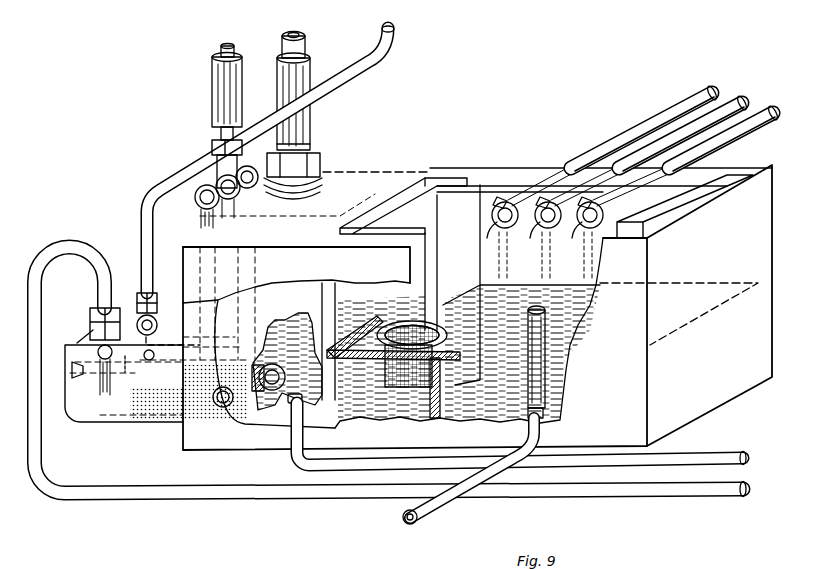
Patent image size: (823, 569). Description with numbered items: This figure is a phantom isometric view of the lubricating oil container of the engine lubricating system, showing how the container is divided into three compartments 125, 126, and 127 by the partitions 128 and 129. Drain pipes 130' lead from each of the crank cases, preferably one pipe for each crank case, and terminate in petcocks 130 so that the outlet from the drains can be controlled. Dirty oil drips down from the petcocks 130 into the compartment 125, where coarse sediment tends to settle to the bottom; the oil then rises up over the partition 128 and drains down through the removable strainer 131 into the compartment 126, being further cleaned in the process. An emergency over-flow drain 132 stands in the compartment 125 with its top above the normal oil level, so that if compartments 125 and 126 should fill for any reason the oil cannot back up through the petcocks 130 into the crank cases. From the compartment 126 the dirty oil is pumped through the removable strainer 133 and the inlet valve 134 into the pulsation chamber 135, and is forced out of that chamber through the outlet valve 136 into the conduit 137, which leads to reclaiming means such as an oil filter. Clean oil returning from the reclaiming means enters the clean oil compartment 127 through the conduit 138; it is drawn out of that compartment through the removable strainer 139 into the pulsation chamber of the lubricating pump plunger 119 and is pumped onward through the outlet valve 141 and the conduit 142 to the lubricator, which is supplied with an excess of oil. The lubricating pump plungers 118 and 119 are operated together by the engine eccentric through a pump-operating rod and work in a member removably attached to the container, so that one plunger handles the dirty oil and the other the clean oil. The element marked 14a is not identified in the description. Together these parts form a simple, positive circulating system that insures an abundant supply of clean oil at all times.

The compartment 125 is at (477, 307).
The compartment 126 is at (375, 417).
The clean oil compartment 127 is at (283, 402).
The partition 128 is at (438, 406).
The partition 129 is at (365, 198).
The petcocks 130 is at (580, 211).
The drain pipes 130' is at (675, 119).
The removable strainer 131 is at (306, 44).
The emergency over-flow drain 132 is at (547, 340).
The removable strainer 133 is at (163, 416).
The inlet valve 134 is at (102, 378).
The pulsation chamber 135 is at (125, 372).
The outlet valve 136 is at (82, 338).
The conduit 137 is at (78, 486).
The conduit 138 is at (300, 458).
The removable strainer 139 is at (125, 307).
The outlet valve 141 is at (157, 316).
The conduit 142 is at (389, 50).
The lubricating pump plunger 118 is at (202, 225).
The lubricating pump plunger 119 is at (322, 197).
The pipe 14a is at (176, 338).